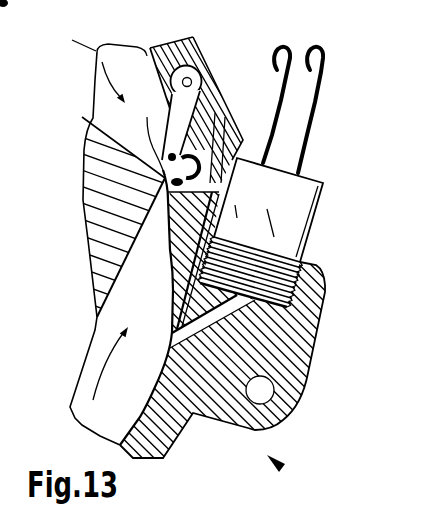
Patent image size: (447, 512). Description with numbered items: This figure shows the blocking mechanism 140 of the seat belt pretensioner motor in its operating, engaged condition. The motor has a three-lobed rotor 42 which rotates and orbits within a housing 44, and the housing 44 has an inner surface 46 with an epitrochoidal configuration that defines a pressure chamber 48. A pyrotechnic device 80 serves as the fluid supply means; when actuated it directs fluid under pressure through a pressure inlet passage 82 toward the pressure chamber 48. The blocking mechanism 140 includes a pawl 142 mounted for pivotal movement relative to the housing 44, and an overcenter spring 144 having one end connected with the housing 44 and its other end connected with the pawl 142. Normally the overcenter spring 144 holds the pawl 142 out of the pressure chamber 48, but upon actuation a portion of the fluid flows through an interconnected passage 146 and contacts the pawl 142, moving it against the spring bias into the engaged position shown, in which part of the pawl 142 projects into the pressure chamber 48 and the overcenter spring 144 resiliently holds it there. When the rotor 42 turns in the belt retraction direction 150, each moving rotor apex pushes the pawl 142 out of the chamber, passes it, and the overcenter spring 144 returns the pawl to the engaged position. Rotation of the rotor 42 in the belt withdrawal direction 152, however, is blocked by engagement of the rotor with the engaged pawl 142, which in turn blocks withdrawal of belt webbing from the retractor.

The rotor 42 is at (82, 117).
The housing 44 is at (203, 58).
The inner surface 46 is at (150, 48).
The pressure chamber 48 is at (176, 182).
The pyrotechnic device 80 is at (323, 181).
The pressure inlet passage 82 is at (213, 313).
The blocking mechanism 140 is at (282, 469).
The pawl 142 is at (218, 77).
The overcenter spring 144 is at (172, 158).
The interconnected passage 146 is at (237, 104).
The belt retraction direction 150 is at (96, 74).
The belt withdrawal direction 152 is at (113, 362).